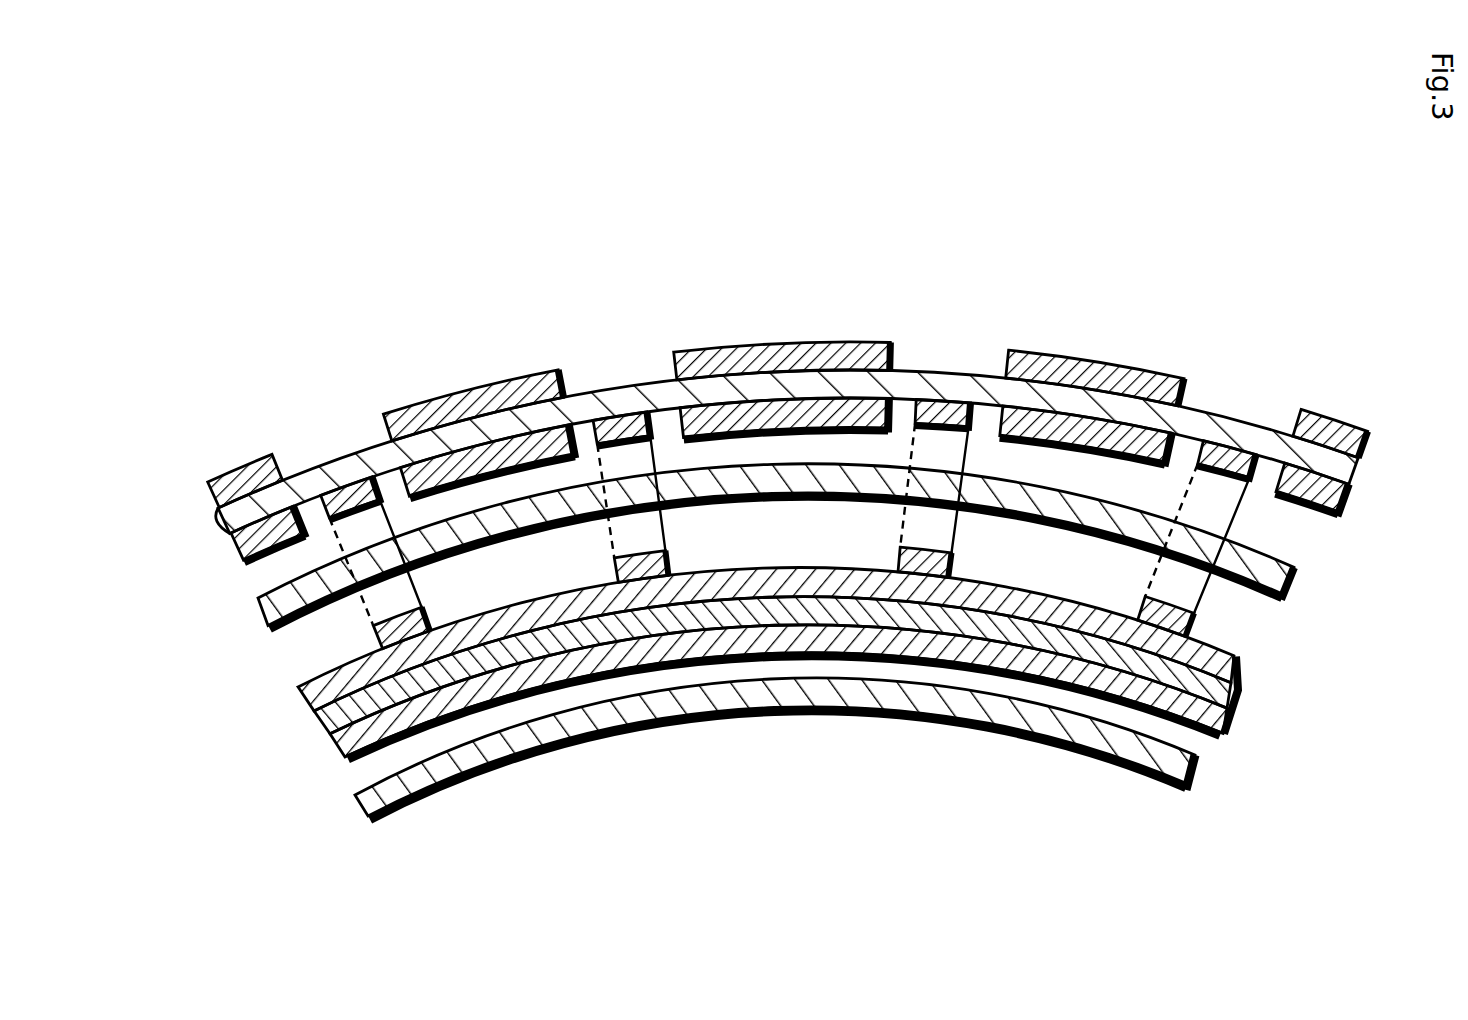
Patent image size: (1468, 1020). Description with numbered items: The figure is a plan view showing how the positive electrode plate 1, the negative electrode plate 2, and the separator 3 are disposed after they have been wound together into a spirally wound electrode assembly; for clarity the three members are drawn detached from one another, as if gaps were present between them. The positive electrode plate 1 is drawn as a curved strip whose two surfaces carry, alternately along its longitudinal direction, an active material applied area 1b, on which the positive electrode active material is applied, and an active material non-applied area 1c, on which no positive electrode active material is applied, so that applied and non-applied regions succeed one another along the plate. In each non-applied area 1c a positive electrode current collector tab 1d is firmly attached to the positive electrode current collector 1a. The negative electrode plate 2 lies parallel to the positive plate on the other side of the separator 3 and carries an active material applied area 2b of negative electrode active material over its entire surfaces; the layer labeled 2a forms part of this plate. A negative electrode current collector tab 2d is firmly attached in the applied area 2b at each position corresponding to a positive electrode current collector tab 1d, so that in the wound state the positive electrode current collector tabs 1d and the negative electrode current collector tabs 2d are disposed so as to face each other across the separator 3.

The positive electrode plate 1 is at (778, 444).
The positive electrode current collector 1a is at (225, 522).
The active material applied area 1b is at (270, 525).
The active material non-applied area 1c is at (300, 482).
The positive electrode current collector tab 1d is at (345, 498).
The negative electrode plate 2 is at (812, 657).
The dielectric layer 2a is at (1230, 693).
The active material applied area 2b is at (1157, 697).
The negative electrode current collector tab 2d is at (425, 612).
The separator 3 is at (1298, 588).